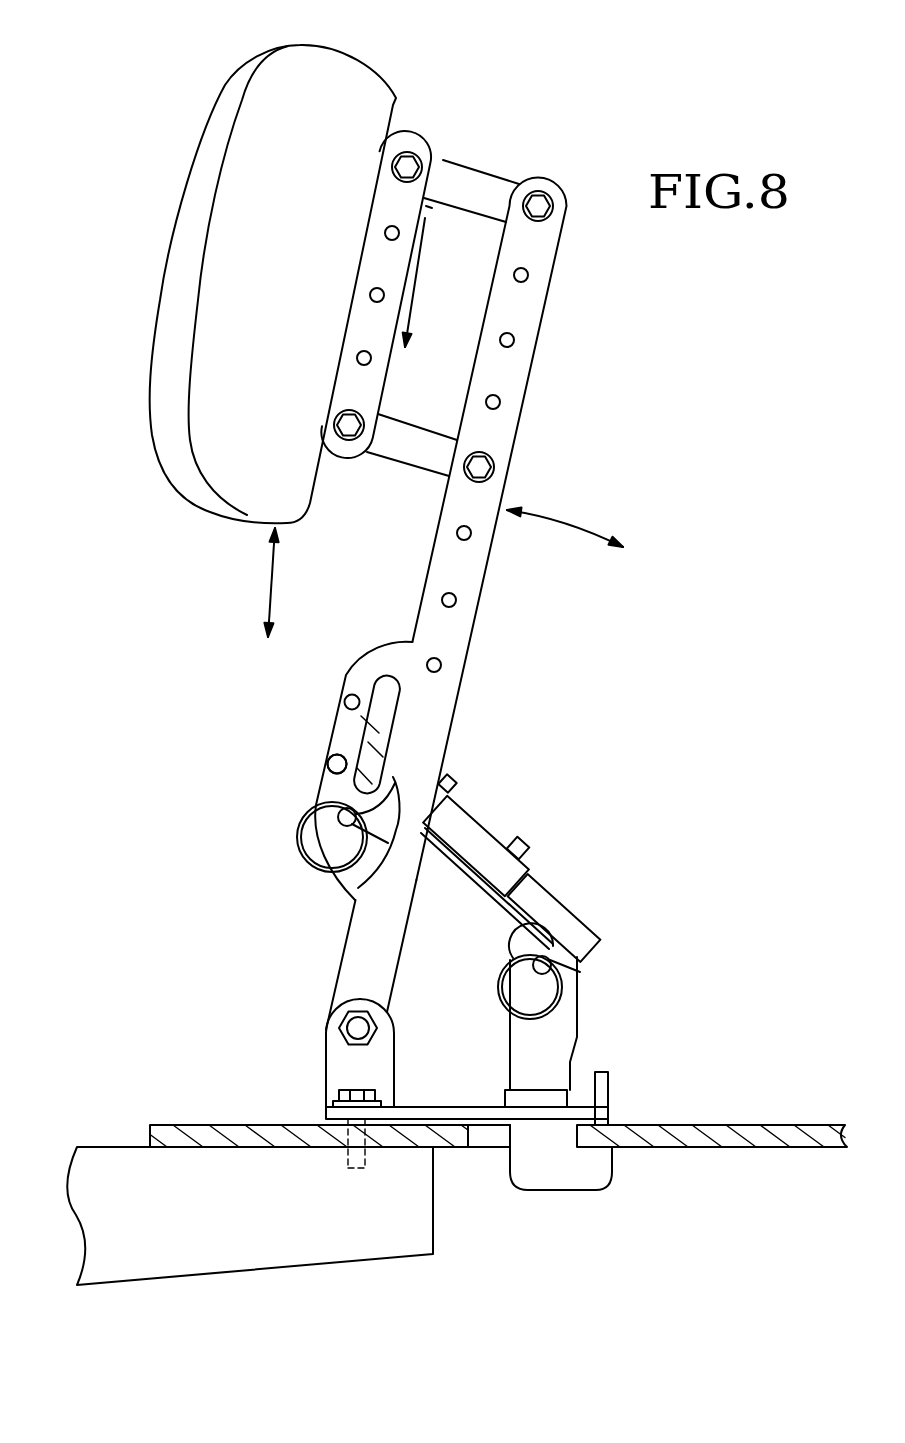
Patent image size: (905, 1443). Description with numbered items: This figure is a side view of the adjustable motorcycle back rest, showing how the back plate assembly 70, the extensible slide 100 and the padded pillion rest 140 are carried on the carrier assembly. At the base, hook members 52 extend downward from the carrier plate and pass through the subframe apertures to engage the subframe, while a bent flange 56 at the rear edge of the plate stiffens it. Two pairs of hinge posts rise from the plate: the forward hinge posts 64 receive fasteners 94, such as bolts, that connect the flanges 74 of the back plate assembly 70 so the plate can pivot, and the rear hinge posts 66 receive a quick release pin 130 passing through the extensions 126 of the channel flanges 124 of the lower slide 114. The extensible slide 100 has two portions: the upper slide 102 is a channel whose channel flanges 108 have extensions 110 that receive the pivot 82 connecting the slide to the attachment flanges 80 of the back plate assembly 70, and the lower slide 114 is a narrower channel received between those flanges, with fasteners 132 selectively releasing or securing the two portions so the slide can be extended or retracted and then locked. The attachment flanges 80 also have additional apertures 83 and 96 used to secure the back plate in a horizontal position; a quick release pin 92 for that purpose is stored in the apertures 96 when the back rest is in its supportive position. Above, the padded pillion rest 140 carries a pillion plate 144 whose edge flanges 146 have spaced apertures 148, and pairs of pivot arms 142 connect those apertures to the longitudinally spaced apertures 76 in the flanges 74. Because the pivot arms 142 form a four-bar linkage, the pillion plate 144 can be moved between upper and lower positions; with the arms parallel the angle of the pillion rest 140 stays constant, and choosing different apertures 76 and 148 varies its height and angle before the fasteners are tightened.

The padded pillion rest 140 is at (178, 303).
The pillion plate 144 is at (418, 134).
The spaced apertures 148 is at (370, 290).
The pivot arms 142 is at (490, 177).
The edge flanges 146 is at (428, 212).
The flanges 74 is at (437, 565).
The apertures 76 is at (515, 341).
The attachment flanges 80 is at (380, 641).
The additional aperture 83 is at (345, 698).
The pivot 82 is at (329, 756).
The extensions 110 is at (327, 764).
The additional aperture 96 is at (385, 796).
The quick release pin 92 is at (326, 818).
The back plate assembly 70 is at (347, 952).
The fasteners 94 is at (339, 1028).
The forward hinge posts 64 is at (326, 1060).
The extensible slide 100 is at (532, 888).
The upper slide 102 is at (483, 818).
The channel flanges 108 is at (455, 808).
The fasteners 132 is at (531, 848).
The lower slide 114 is at (561, 905).
The channel flanges 124 is at (512, 903).
The extensions 126 is at (525, 950).
The quick release pin 130 is at (572, 960).
The rear hinge posts 66 is at (578, 1034).
The flange 56 is at (609, 1090).
The hook members 52 is at (558, 1192).